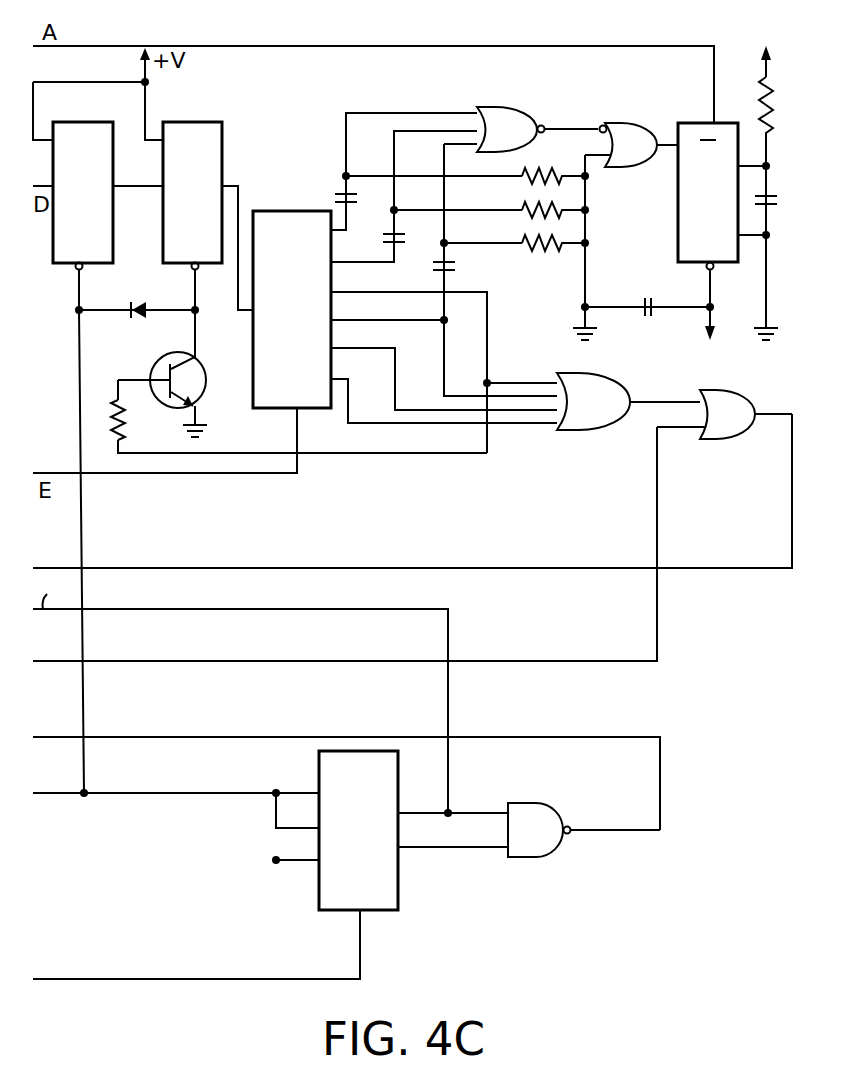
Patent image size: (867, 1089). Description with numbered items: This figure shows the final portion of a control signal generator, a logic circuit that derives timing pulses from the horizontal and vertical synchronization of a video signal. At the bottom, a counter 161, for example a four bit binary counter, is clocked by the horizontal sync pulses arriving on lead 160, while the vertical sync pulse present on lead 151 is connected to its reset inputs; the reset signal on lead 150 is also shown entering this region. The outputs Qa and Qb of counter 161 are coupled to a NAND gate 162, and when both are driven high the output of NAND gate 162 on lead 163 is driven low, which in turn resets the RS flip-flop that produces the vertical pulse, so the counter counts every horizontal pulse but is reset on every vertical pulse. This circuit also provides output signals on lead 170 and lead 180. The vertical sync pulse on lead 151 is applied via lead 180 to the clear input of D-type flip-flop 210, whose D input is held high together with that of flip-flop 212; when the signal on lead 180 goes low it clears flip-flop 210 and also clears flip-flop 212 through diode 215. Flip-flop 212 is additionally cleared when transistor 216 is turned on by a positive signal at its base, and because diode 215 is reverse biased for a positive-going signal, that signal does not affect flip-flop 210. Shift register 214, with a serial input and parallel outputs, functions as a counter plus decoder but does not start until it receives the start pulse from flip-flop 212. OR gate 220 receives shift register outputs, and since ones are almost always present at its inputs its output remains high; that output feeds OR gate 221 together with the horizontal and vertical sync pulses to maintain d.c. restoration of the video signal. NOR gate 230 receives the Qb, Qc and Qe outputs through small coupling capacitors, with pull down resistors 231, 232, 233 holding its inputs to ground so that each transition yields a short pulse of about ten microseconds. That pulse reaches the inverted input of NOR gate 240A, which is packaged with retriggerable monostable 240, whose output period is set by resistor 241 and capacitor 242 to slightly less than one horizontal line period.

The D-type flip-flop 210 is at (72, 122).
The flip-flop 212 is at (190, 122).
The shift register 214 is at (302, 211).
The diode 215 is at (128, 305).
The transistor 216 is at (200, 360).
The lead 180 is at (84, 356).
The NOR gate 230 is at (500, 107).
The NOR gate 240A is at (625, 123).
The retriggerable monostable 240 is at (700, 123).
The pull down resistor 231 is at (528, 176).
The pull down resistor 232 is at (527, 214).
The pull down resistor 233 is at (527, 247).
The resistor 241 is at (773, 97).
The capacitor 242 is at (768, 196).
The OR gate 220 is at (590, 373).
The OR gate 221 is at (741, 378).
The lead 170 is at (117, 598).
The lead 150 is at (119, 725).
The lead 151 is at (119, 780).
The lead 160 is at (125, 979).
The counter 161 is at (398, 893).
The NAND gate 162 is at (531, 803).
The lead 163 is at (662, 777).